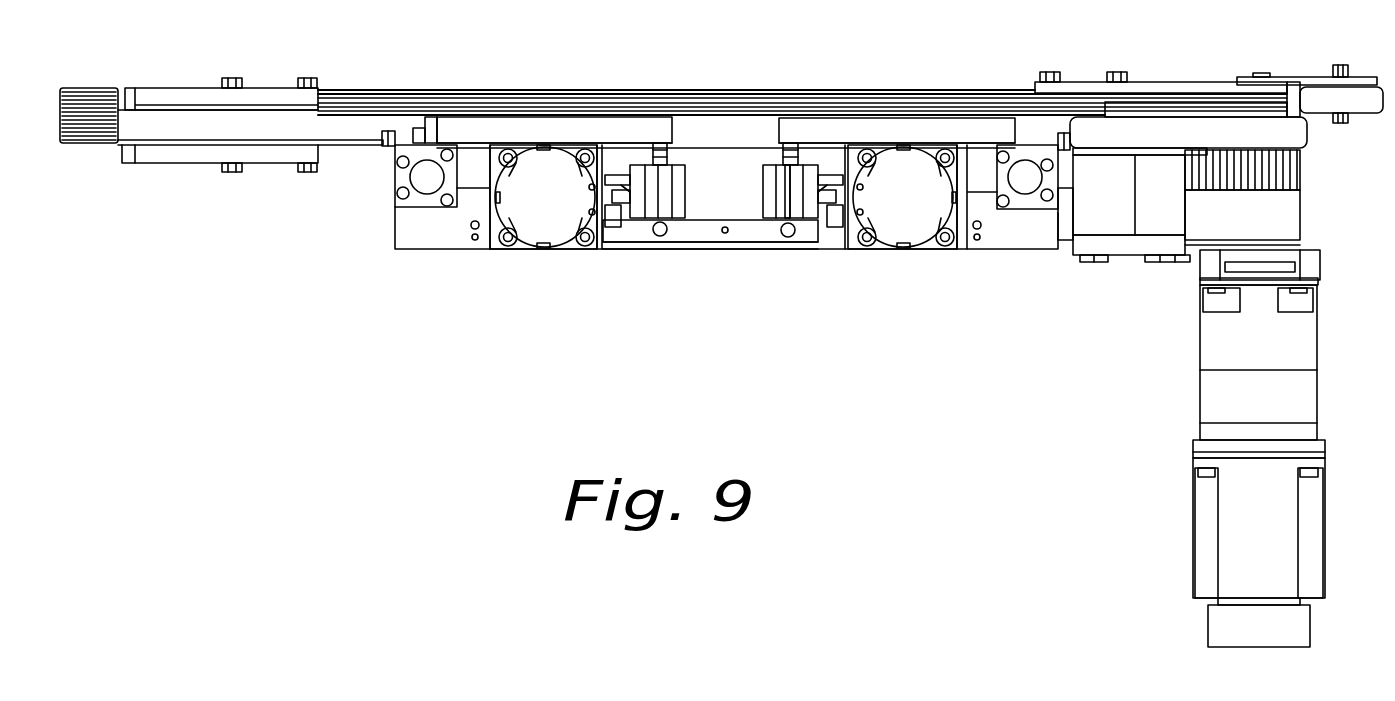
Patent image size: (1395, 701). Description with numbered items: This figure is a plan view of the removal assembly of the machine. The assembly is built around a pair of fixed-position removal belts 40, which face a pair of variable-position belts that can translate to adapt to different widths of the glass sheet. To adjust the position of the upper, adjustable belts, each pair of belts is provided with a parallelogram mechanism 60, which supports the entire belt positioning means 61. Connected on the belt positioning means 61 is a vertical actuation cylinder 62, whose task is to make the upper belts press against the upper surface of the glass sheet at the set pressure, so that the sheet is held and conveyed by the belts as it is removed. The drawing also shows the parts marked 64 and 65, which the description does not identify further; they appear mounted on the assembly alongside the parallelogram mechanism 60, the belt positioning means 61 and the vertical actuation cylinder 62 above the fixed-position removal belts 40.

The fixed-position removal belts 40 is at (570, 379).
The parallelogram mechanism 60 is at (427, 185).
The belt positioning means 61 is at (1140, 130).
The vertical actuation cylinder 62 is at (537, 223).
The mounting block 64 is at (590, 123).
The pneumatic cylinder 65 is at (650, 200).